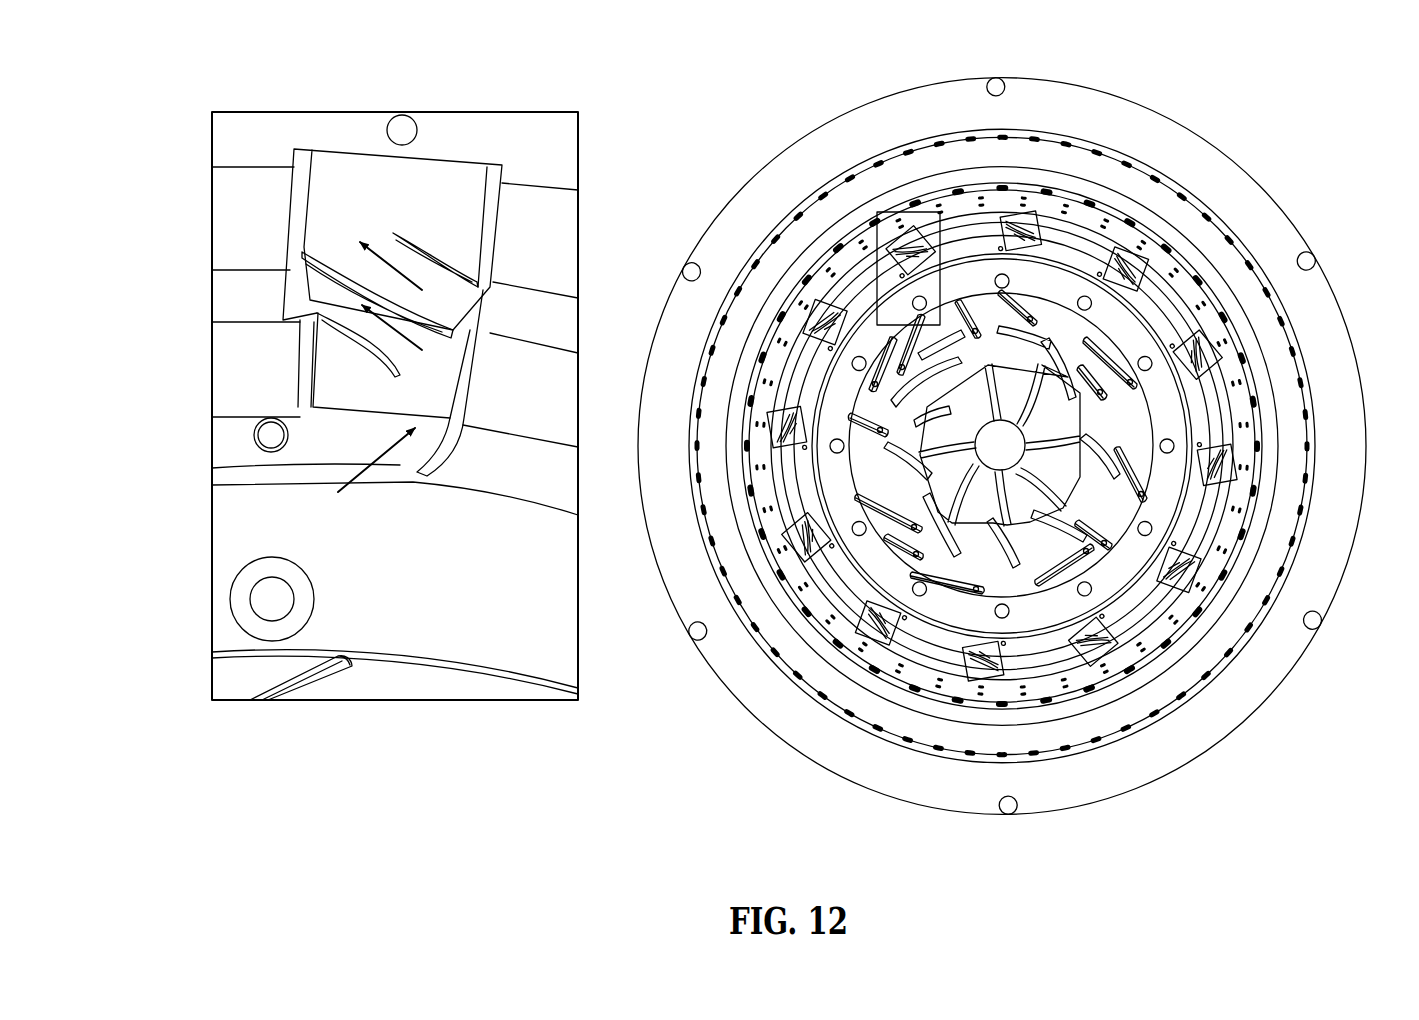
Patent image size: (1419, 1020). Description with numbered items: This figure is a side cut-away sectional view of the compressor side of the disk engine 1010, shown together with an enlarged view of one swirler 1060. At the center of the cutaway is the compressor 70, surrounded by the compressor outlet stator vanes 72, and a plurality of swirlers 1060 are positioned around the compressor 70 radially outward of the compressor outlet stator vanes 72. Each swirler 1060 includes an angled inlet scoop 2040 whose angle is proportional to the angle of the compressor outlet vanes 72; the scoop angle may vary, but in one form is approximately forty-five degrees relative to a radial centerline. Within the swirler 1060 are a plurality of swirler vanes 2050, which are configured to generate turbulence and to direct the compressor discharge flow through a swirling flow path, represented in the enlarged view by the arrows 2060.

The disk engine 1010 is at (1270, 100).
The swirler 1060 is at (920, 313).
The compressor outlet stator vanes 72 is at (1033, 293).
The compressor 70 is at (1100, 403).
The angled inlet scoop 2040 is at (427, 472).
The arrows 2060 is at (470, 332).
The swirler vanes 2050 is at (327, 256).